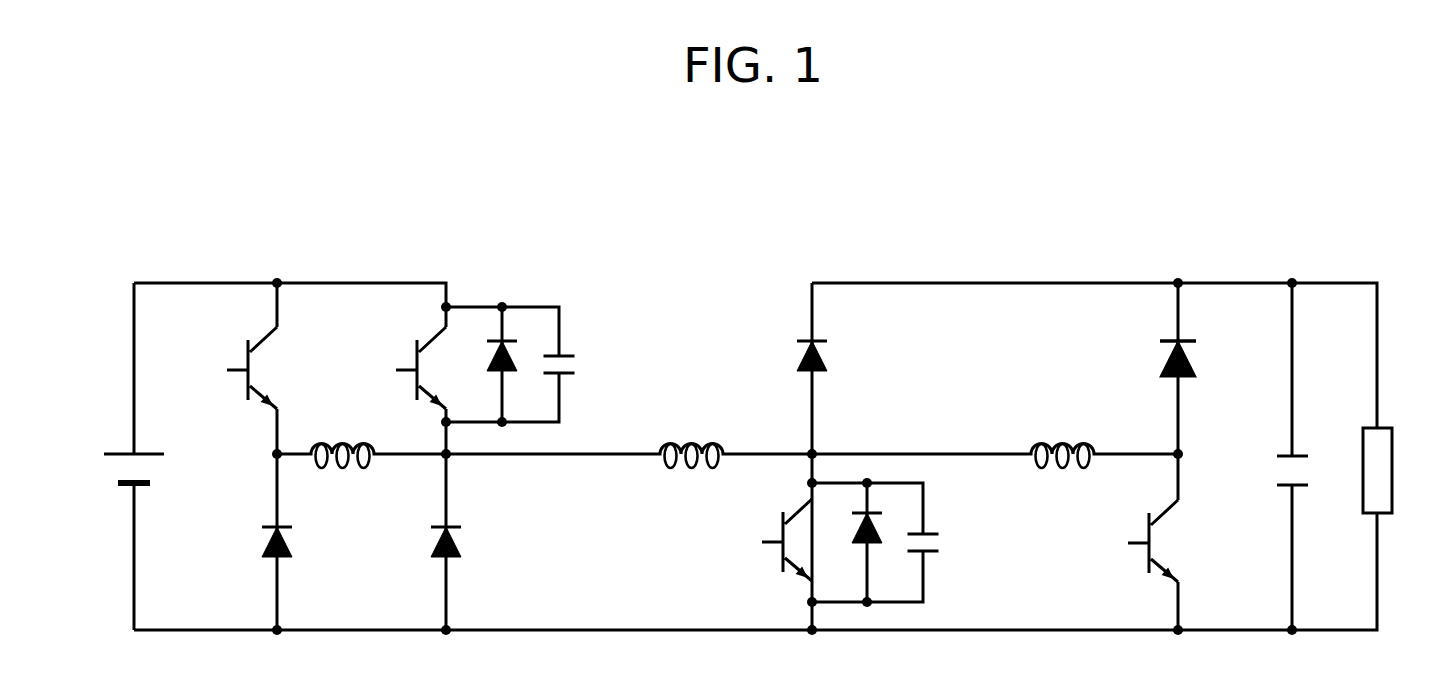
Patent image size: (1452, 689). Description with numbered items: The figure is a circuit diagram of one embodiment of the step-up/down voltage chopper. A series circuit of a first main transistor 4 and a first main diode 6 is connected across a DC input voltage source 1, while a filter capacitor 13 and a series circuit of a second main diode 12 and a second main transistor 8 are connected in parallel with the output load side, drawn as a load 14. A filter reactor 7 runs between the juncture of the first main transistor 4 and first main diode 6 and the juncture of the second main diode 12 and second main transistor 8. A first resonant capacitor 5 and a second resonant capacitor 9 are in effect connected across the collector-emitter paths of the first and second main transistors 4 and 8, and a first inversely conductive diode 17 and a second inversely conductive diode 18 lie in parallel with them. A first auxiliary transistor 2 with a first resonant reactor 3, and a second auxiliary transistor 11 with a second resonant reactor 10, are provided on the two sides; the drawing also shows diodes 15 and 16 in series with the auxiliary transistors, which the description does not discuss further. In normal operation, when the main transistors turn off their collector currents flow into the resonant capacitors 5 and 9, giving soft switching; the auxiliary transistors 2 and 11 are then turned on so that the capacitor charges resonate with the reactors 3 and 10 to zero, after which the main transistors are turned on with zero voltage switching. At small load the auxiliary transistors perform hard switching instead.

The DC input voltage source 1 is at (105, 477).
The first auxiliary transistor 2 is at (227, 370).
The first resonant reactor 3 is at (352, 470).
The first main transistor 4 is at (397, 370).
The first resonant capacitor 5 is at (577, 362).
The first main diode 6 is at (429, 542).
The filter reactor 7 is at (697, 475).
The second main transistor 8 is at (762, 542).
The second resonant capacitor 9 is at (943, 542).
The second resonant reactor 10 is at (1068, 422).
The second auxiliary transistor 11 is at (1128, 543).
The second main diode 12 is at (832, 355).
The filter capacitor 13 is at (1277, 470).
The load resistor 14 is at (1393, 455).
The diode 15 is at (261, 542).
The diode 16 is at (1190, 357).
The first inversely conductive diode 17 is at (518, 334).
The second inversely conductive diode 18 is at (875, 548).